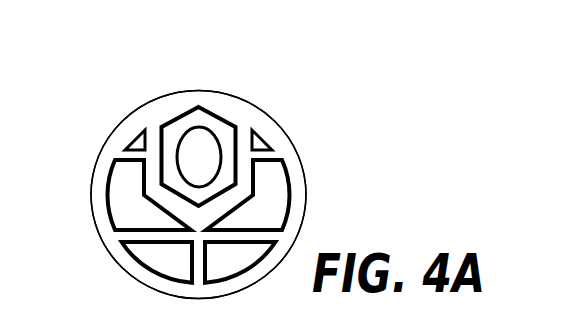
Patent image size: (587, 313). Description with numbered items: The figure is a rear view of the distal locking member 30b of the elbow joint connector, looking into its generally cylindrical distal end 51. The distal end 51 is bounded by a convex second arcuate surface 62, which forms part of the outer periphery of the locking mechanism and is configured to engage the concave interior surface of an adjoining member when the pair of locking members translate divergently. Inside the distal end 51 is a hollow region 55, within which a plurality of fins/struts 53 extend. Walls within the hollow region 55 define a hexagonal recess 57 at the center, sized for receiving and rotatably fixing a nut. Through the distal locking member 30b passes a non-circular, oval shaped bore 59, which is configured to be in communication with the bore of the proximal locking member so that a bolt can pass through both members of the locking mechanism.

The second arcuate surface 62 is at (198, 90).
The distal end 51 is at (293, 221).
The distal locking member 30b is at (293, 167).
The hollow region 55 is at (262, 210).
The hexagonal recess 57 is at (223, 130).
The oval shaped bore 59 is at (195, 153).
The fins/struts 53 is at (263, 143).